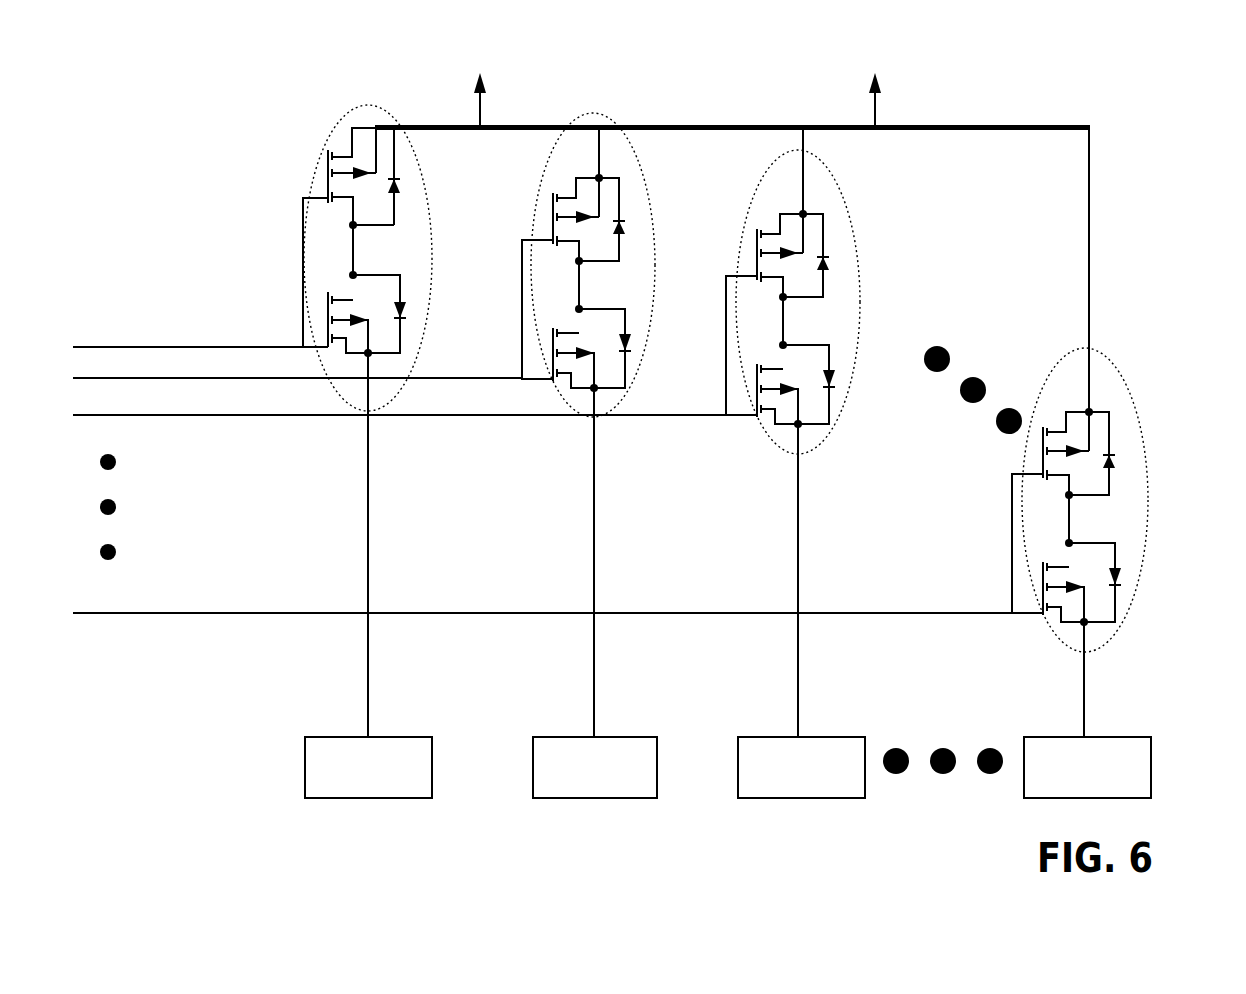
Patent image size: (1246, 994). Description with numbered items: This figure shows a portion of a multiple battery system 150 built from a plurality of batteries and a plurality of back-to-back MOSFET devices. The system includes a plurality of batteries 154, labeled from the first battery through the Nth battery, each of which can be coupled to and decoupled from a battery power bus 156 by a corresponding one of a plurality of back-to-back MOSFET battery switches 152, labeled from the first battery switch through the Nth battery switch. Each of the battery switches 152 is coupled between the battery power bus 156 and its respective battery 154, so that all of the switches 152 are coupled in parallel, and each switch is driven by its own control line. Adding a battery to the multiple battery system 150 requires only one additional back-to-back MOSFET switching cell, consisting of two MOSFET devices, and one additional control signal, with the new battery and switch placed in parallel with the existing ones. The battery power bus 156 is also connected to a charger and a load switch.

The multiple battery system 150 is at (224, 105).
The back-to-back MOSFET battery switches 152 is at (270, 232).
The batteries 154 is at (322, 737).
The battery power bus 156 is at (1027, 100).